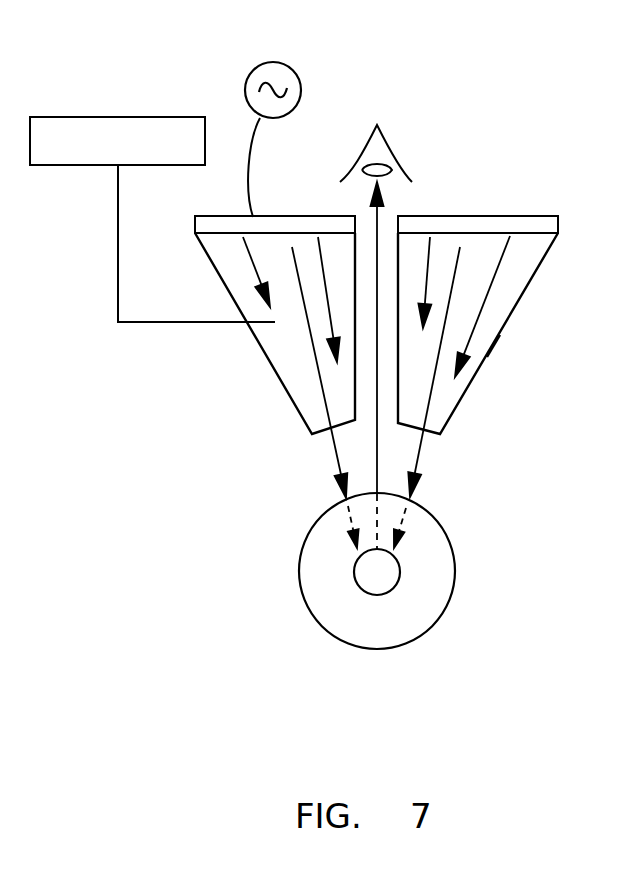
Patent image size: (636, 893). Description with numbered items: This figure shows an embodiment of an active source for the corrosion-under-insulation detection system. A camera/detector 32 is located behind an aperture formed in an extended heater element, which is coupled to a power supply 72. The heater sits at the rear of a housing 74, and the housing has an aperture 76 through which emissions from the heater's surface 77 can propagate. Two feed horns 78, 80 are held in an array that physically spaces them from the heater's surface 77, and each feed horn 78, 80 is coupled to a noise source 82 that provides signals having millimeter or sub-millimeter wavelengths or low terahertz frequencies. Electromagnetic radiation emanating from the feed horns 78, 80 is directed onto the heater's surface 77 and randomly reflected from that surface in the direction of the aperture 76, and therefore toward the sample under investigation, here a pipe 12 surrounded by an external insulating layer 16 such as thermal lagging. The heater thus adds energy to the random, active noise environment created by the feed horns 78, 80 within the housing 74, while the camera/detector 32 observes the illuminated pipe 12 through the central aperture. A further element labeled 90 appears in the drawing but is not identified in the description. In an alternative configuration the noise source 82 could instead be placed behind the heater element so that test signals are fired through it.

The noise source 82 is at (117, 117).
The power supply 72 is at (301, 87).
The camera/detector 32 is at (393, 153).
The transducer array 90 is at (493, 235).
The heater's surface 77 is at (523, 237).
The housing 74 is at (470, 299).
The feed horn 78 is at (488, 358).
The feed horn 80 is at (346, 245).
The aperture 76 is at (365, 422).
The external insulating layer 16 is at (318, 583).
The pipe 12 is at (402, 572).